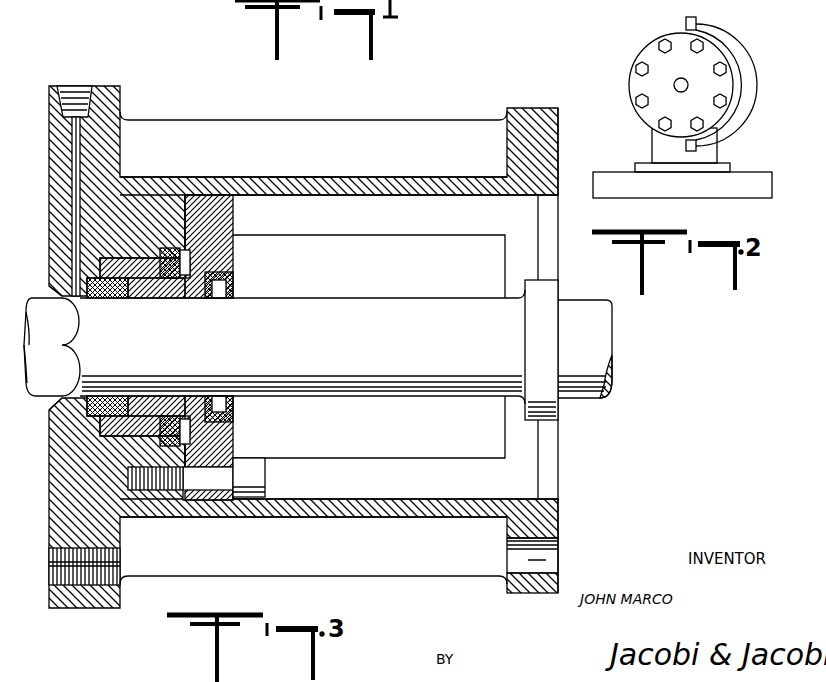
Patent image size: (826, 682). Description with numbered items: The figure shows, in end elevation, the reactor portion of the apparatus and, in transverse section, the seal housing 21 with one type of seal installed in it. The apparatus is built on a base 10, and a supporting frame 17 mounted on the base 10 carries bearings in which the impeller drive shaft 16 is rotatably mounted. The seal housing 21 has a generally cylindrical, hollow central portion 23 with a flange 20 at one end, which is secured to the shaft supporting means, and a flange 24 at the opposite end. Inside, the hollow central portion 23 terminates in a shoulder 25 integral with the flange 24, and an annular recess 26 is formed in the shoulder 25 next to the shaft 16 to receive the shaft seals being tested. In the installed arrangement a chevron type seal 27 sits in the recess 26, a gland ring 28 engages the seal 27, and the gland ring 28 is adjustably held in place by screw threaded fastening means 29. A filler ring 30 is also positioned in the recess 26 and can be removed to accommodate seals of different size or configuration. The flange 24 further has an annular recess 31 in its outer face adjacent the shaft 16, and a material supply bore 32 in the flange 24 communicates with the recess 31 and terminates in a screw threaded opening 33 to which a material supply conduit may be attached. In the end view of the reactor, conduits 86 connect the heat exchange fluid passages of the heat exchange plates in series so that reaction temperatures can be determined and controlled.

In FIG. 2, the base 10 is at (762, 172).
In FIG. 3, the impeller drive shaft 16 is at (415, 297).
In FIG. 2, the supporting frame 17 is at (652, 148).
In FIG. 3, the flange 20 is at (558, 108).
In FIG. 3, the seal housing 21 is at (371, 170).
In FIG. 3, the central portion 23 is at (305, 178).
In FIG. 3, the flange 24 is at (119, 88).
In FIG. 3, the shoulder 25 is at (185, 212).
In FIG. 3, the annular recess 26 is at (147, 270).
In FIG. 3, the chevron type seal 27 is at (114, 290).
In FIG. 3, the gland ring 28 is at (233, 246).
In FIG. 3, the screw threaded fastening means 29 is at (262, 462).
In FIG. 3, the filler ring 30 is at (181, 288).
In FIG. 3, the annular recess 31 is at (62, 294).
In FIG. 3, the material supply bore 32 is at (72, 200).
In FIG. 3, the screw threaded opening 33 is at (68, 88).
In FIG. 2, the conduits 86 is at (737, 48).